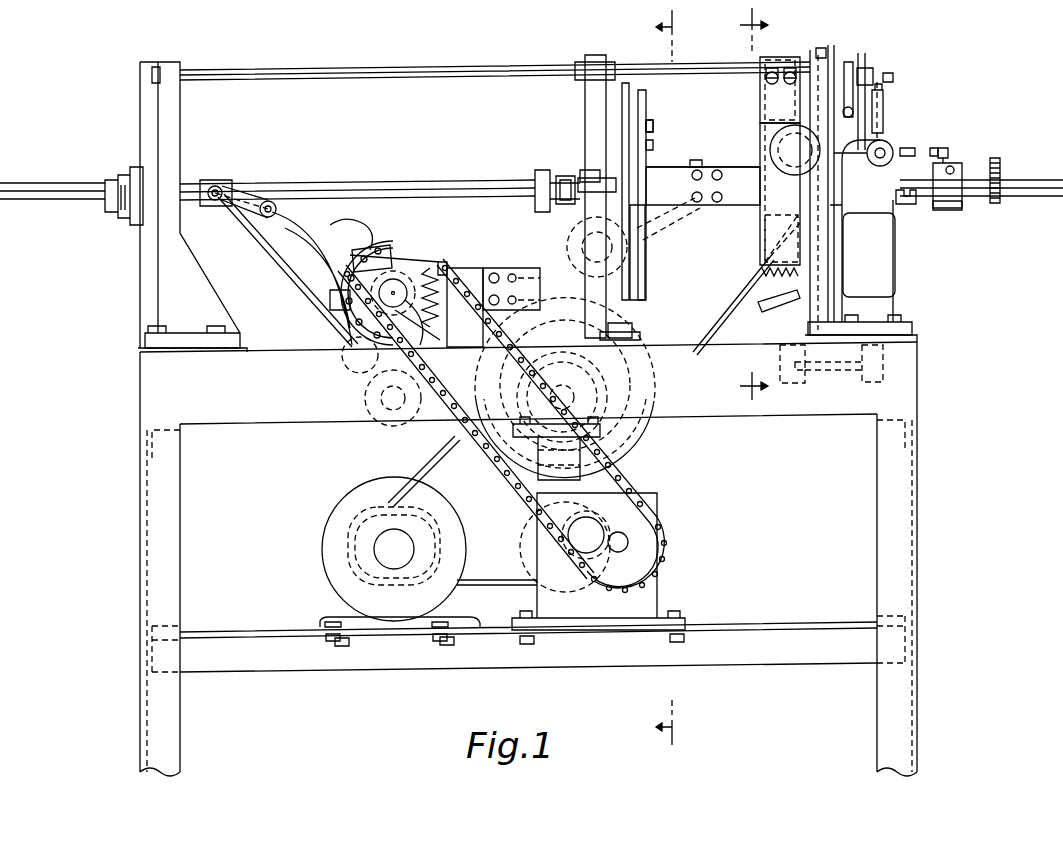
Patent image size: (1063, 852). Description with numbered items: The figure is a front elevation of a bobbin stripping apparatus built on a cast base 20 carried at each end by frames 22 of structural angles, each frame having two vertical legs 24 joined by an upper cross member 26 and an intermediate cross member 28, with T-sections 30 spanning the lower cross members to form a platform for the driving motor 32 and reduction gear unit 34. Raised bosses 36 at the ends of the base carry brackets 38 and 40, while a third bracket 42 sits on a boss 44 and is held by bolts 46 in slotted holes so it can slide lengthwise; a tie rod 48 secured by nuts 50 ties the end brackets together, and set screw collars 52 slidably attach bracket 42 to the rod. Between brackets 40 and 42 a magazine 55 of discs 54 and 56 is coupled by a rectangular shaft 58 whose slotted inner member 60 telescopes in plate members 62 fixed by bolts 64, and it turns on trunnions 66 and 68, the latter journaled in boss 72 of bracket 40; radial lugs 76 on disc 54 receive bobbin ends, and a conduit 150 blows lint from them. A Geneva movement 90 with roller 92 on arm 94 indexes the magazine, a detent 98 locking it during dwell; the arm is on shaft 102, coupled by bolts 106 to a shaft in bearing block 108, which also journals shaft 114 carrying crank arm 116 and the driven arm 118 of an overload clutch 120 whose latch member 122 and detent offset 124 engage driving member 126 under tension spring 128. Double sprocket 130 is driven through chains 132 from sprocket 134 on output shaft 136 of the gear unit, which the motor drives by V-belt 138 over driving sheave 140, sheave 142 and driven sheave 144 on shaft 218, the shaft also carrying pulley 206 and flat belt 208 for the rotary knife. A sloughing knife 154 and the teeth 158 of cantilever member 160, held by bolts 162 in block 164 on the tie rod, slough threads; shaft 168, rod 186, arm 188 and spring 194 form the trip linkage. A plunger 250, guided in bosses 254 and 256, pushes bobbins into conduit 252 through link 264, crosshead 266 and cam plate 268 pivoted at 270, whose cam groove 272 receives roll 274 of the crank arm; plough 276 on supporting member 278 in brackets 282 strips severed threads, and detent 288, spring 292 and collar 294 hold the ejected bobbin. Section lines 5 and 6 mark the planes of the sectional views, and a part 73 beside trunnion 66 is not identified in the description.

The cast base 20 is at (150, 397).
The frames 22 is at (142, 578).
The vertical legs 24 is at (150, 738).
The cross member 26 is at (150, 455).
The cross member 28 is at (148, 614).
The T-sections 30 is at (814, 662).
The driving motor 32 is at (334, 565).
The reduction gear unit 34 is at (655, 500).
The raised bosses 36 is at (140, 351).
The bracket 38 is at (147, 278).
The bracket 40 is at (880, 328).
The third bracket 42 is at (595, 60).
The third boss 44 is at (715, 322).
The bolts 46 is at (590, 250).
The tie rod 48 is at (434, 72).
The nuts 50 is at (162, 72).
The set screw collars 52 is at (578, 68).
The disc 54 is at (625, 96).
The magazine 55 is at (656, 137).
The disc 56 is at (867, 55).
The rectangular shaft 58 is at (694, 166).
The slotted inner member 60 is at (760, 230).
The plate members 62 is at (663, 168).
The bolts 64 is at (694, 180).
The trunnion 66 is at (560, 178).
The trunnion 68 is at (900, 203).
The boss 72 is at (875, 245).
The bolt 73 is at (590, 172).
The lugs 76 is at (640, 105).
The Geneva movement 90 is at (646, 288).
The roller 92 is at (636, 335).
The arm 94 is at (632, 318).
The detent 98 is at (655, 242).
The shaft 102 is at (520, 268).
The bolts 106 is at (483, 288).
The bearing block 108 is at (448, 262).
The shaft 114 is at (360, 335).
The crank arm 116 is at (345, 318).
The driven arm 118 is at (430, 352).
The overload clutch 120 is at (375, 395).
The latch member 122 is at (410, 250).
The detent offset 124 is at (360, 245).
The driving member 126 is at (430, 270).
The tension spring 128 is at (425, 336).
The double sprocket 130 is at (350, 352).
The chains 132 is at (440, 432).
The double sprocket 134 is at (630, 540).
The output shaft 136 is at (662, 530).
The double V-belt 138 is at (428, 470).
The double driving sheave 140 is at (530, 502).
The double sheave 142 is at (530, 574).
The driven double sheave 144 is at (642, 378).
The conduit 150 is at (592, 176).
The sloughing knife 154 is at (772, 312).
The teeth 158 is at (762, 275).
The cantilever member 160 is at (768, 108).
The bolts 162 is at (760, 88).
The block 164 is at (778, 62).
The shaft 168 is at (878, 74).
The rod 186 is at (866, 64).
The arm 188 is at (892, 148).
The spring 194 is at (886, 108).
The large driving pulley 206 is at (635, 468).
The flat belt 208 is at (645, 432).
The shaft 218 is at (578, 372).
The plunger 250 is at (292, 182).
The conduit 252 is at (1020, 178).
The boss 254 is at (158, 178).
The boss 256 is at (535, 174).
The link 264 is at (260, 200).
The crosshead 266 is at (218, 185).
The cam plate 268 is at (270, 245).
The pivot point 270 is at (380, 405).
The cam groove 272 is at (332, 258).
The roll 274 is at (335, 298).
The plough 276 is at (768, 352).
The supporting member 278 is at (845, 374).
The brackets 282 is at (885, 372).
The detent 288 is at (950, 163).
The spring 292 is at (995, 204).
The collar 294 is at (948, 210).
The section line 5 is at (746, 204).
The section line 6 is at (661, 389).